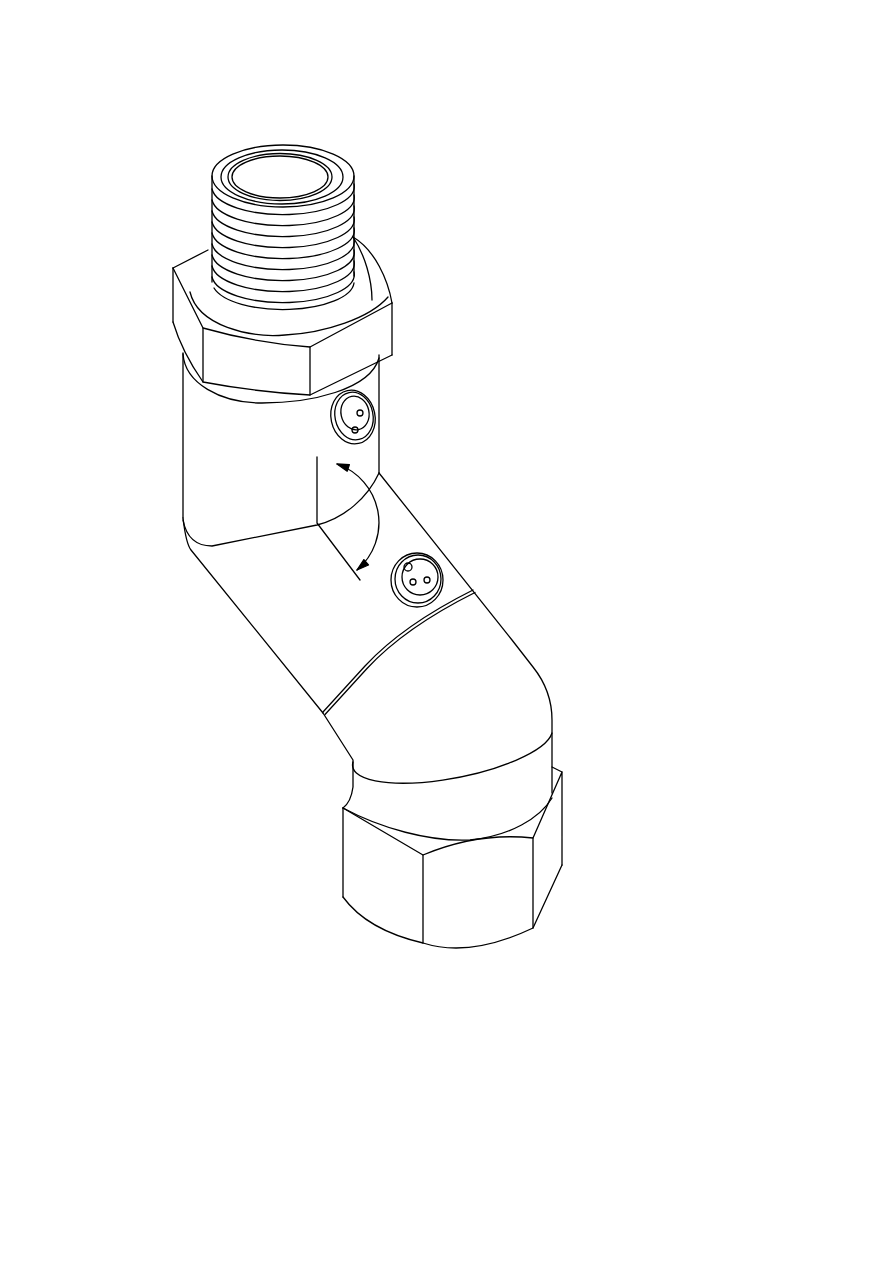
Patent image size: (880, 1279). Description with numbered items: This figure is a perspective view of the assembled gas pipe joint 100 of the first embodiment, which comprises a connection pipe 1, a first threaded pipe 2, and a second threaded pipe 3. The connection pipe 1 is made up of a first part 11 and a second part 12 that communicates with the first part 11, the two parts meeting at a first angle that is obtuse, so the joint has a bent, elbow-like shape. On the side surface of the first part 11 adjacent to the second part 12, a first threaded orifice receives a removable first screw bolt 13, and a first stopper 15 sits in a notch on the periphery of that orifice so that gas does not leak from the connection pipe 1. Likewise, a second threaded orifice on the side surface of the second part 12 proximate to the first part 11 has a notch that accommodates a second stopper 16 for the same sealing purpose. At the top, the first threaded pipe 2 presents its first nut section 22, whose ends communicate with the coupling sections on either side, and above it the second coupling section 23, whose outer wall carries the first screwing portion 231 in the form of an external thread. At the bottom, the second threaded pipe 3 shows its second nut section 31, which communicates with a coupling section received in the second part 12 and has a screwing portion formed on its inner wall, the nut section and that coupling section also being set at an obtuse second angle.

The gas pipe joint 100 is at (383, 103).
The connection pipe 1 is at (130, 560).
The first threaded pipe 2 is at (250, 140).
The second threaded pipe 3 is at (533, 667).
The first part 11 is at (213, 443).
The second part 12 is at (268, 626).
The first screw bolt 13 is at (363, 410).
The first stopper 15 is at (363, 427).
The second stopper 16 is at (410, 565).
The first nut section 22 is at (172, 292).
The second coupling section 23 is at (220, 172).
The first screwing portion 231 is at (330, 247).
The second nut section 31 is at (342, 853).